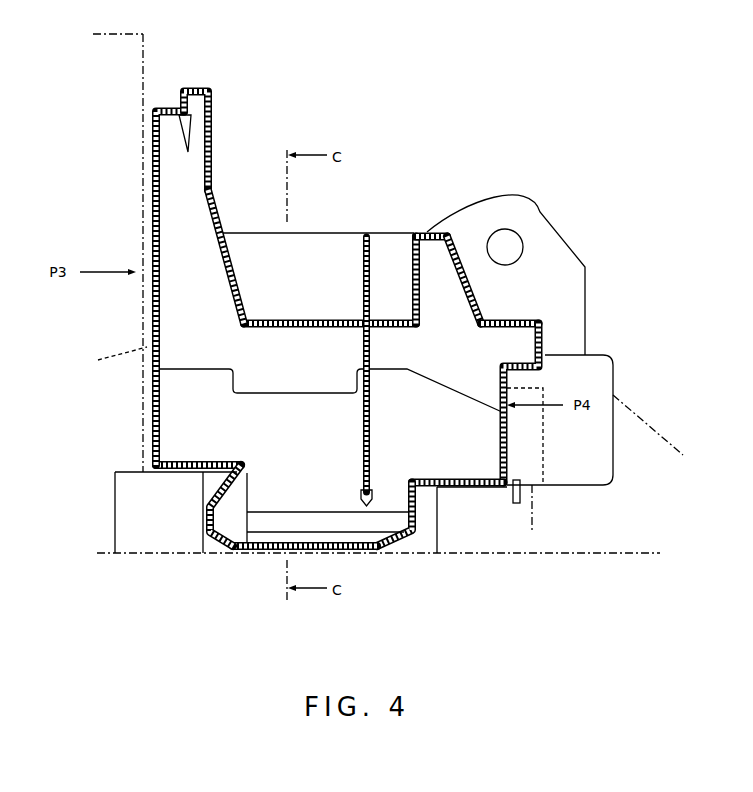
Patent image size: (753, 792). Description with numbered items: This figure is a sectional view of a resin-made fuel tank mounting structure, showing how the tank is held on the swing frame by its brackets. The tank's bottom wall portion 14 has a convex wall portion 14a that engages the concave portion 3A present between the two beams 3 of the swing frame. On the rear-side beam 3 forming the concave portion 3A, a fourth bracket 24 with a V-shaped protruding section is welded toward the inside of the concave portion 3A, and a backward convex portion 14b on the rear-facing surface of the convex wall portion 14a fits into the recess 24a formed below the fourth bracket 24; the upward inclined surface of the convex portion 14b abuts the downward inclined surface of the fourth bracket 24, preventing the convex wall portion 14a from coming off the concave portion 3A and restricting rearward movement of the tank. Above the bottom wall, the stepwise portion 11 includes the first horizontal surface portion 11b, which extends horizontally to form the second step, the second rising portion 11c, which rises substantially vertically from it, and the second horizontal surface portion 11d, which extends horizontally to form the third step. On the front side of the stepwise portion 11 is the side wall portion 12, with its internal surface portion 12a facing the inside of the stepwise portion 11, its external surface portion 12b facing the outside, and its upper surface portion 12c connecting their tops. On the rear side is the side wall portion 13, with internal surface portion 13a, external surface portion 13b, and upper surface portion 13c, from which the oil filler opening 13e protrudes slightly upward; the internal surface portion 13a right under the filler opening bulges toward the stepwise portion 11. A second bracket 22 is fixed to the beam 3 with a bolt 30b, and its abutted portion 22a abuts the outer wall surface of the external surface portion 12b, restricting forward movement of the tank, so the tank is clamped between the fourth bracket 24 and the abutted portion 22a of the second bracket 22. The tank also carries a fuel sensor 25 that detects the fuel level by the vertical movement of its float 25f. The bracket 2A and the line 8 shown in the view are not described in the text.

The bracket 2A is at (556, 228).
The beam 3 is at (155, 534).
The concave portion 3A is at (418, 544).
The side sill 8 is at (147, 57).
The stepwise portion 11 is at (329, 366).
The first horizontal surface portion 11b is at (268, 319).
The second rising portion 11c is at (333, 293).
The second horizontal surface portion 11d is at (328, 233).
The side wall portion 12 is at (458, 244).
The internal surface portion 12a is at (412, 262).
The external surface portion 12b is at (470, 283).
The upper surface portion 12c is at (428, 233).
The side wall portion 13 is at (186, 258).
The internal surface portion 13a is at (231, 258).
The external surface portion 13b is at (152, 129).
The upper surface portion 13c is at (172, 108).
The oil filler opening 13e is at (207, 87).
The bottom wall portion 14 is at (311, 538).
The convex wall portion 14a is at (371, 548).
The backward convex portion 14b is at (213, 550).
The second bracket 22 is at (561, 419).
The abutted portion 22a is at (502, 407).
The fourth bracket 24 is at (155, 541).
The recess 24a is at (214, 548).
The fuel sensor 25 is at (340, 371).
The float 25f is at (362, 502).
The bolt 30b is at (522, 498).